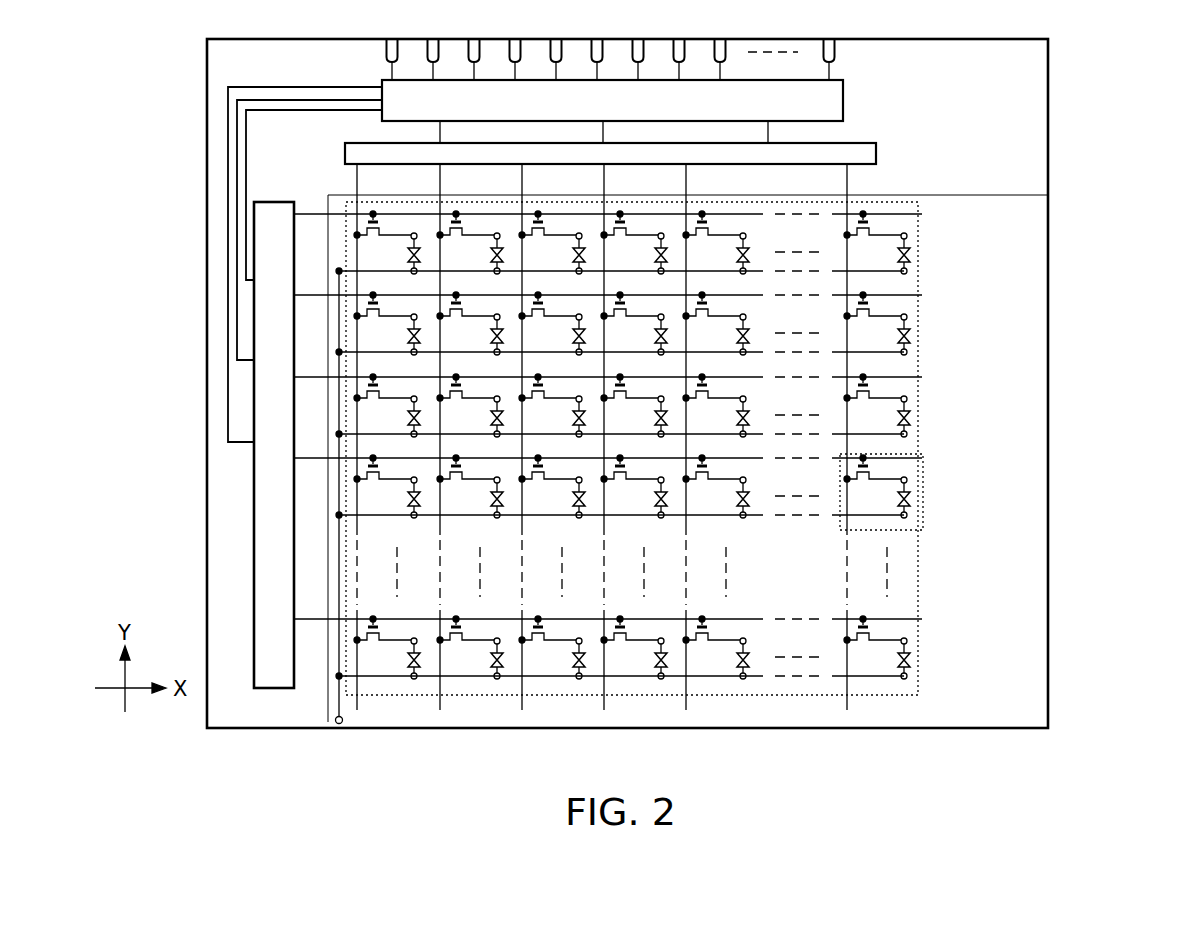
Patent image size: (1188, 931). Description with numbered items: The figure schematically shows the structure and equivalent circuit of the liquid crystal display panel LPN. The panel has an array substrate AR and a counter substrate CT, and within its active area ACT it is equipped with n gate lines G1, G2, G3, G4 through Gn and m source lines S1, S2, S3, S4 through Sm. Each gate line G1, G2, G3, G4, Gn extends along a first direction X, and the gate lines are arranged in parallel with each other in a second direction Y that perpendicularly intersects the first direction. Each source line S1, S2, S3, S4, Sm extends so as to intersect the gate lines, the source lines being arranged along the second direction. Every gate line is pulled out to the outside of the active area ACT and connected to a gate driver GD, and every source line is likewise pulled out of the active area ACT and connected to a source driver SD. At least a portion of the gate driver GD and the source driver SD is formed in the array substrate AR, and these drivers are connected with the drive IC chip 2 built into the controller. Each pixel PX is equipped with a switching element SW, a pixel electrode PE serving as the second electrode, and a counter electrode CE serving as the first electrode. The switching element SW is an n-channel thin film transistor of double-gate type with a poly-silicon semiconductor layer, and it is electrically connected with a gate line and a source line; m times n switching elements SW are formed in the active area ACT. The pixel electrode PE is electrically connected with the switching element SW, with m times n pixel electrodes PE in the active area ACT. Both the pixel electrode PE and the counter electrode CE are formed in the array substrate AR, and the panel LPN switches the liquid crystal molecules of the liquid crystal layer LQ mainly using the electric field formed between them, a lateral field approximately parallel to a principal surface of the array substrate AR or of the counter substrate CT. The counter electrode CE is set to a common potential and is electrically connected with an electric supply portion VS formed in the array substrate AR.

The drive IC chip 2 is at (843, 80).
The liquid crystal display panel LPN is at (691, 406).
The array substrate AR is at (269, 717).
The counter substrate CT is at (1018, 195).
The active area ACT is at (918, 304).
The gate driver GD is at (254, 556).
The source driver SD is at (876, 152).
The gate line G1 is at (307, 212).
The gate line G2 is at (307, 293).
The gate line G3 is at (307, 375).
The gate line G4 is at (307, 456).
The gate line Gn is at (307, 618).
The source line S1 is at (360, 183).
The source line S2 is at (443, 183).
The source line S3 is at (525, 183).
The source line S4 is at (607, 183).
The source line Sm is at (850, 183).
The switching element SW is at (842, 473).
The pixel electrode PE is at (907, 479).
The liquid crystal layer LQ is at (908, 497).
The counter electrode CE is at (907, 514).
The pixel PX is at (894, 493).
The electric supply portion VS is at (342, 723).